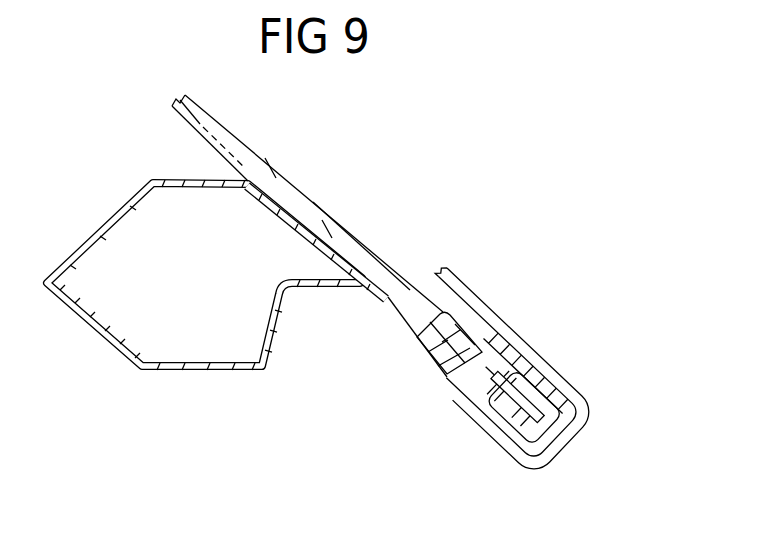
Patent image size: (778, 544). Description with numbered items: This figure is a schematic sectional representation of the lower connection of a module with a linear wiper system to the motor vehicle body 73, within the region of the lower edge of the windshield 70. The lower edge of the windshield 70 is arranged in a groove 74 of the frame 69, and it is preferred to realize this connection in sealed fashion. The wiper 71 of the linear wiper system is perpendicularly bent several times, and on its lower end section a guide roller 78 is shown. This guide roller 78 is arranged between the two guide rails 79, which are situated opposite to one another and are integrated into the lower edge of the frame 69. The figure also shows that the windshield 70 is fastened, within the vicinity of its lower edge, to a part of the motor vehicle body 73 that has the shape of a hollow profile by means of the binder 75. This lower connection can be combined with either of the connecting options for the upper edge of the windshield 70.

The frame 69 is at (447, 378).
The windshield 70 is at (243, 143).
The wiper 71 is at (497, 313).
The motor vehicle body 73 is at (130, 208).
The groove 74 is at (463, 344).
The binder 75 is at (326, 244).
The guide roller 78 is at (497, 408).
The guide rails 79 is at (480, 384).